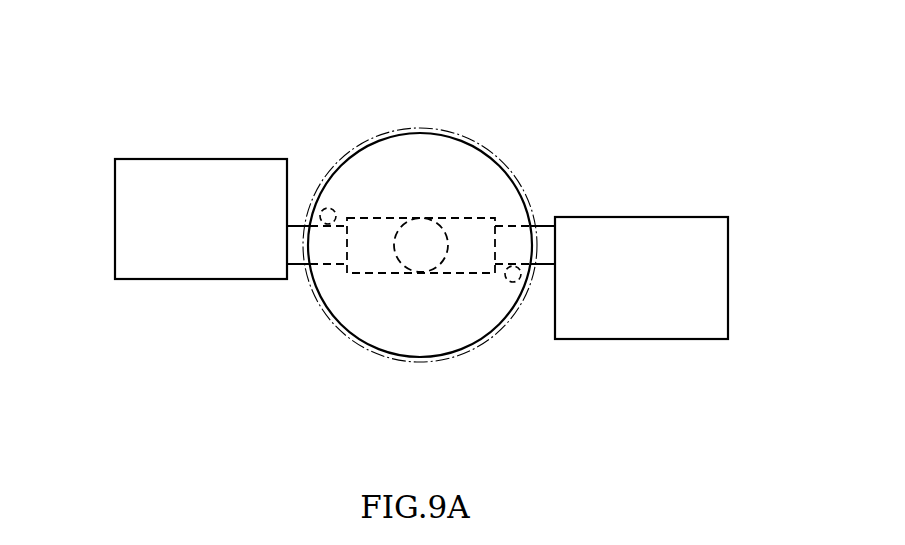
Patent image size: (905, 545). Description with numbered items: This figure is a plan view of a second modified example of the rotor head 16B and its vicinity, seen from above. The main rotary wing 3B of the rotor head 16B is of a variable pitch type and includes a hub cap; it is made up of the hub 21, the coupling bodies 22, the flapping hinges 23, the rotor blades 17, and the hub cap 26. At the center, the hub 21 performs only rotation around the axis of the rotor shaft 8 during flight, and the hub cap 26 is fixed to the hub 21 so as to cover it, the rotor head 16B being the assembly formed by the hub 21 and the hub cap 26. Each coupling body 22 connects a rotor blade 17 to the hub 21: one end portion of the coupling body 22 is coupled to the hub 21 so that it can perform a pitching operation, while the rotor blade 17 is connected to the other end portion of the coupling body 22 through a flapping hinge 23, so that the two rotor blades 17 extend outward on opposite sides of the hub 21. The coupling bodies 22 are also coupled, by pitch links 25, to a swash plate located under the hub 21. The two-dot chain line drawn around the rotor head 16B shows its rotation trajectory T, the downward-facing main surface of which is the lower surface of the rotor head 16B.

The main rotary wing 3B is at (285, 101).
The rotor head 16B is at (365, 421).
The hub cap 26 is at (396, 357).
The rotation trajectory T is at (371, 136).
The hub 21 is at (465, 257).
The rotor shaft 8 is at (421, 232).
The coupling body 22 is at (507, 233).
The pitch link 25 is at (333, 207).
The flapping hinge 23 is at (556, 237).
The rotor blade 17 is at (125, 255).